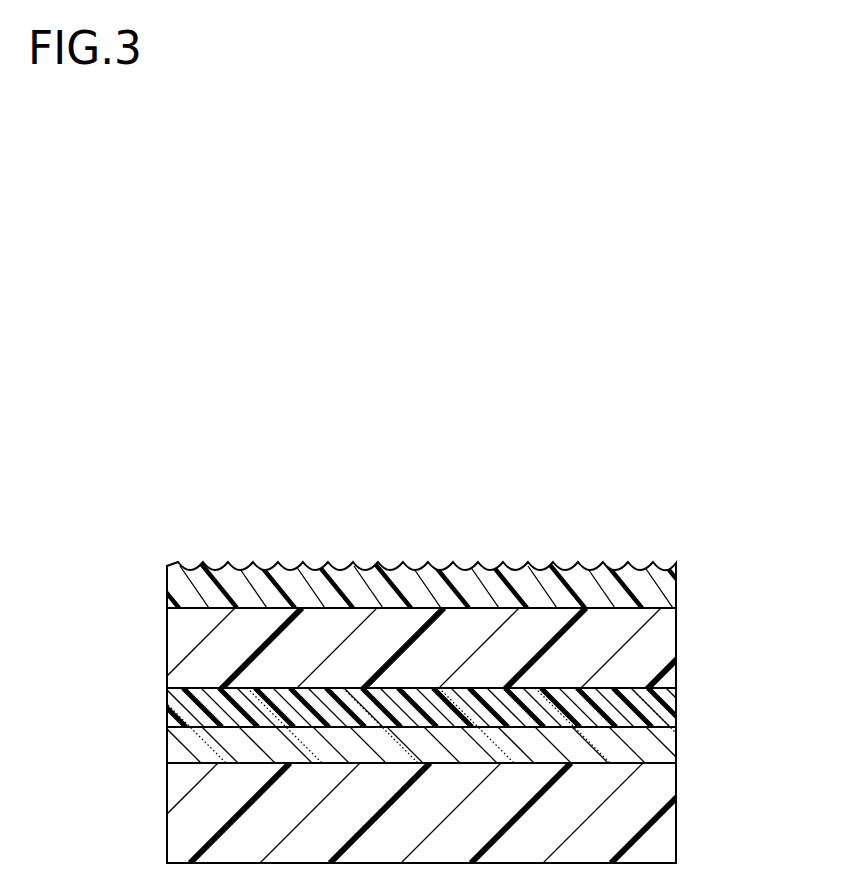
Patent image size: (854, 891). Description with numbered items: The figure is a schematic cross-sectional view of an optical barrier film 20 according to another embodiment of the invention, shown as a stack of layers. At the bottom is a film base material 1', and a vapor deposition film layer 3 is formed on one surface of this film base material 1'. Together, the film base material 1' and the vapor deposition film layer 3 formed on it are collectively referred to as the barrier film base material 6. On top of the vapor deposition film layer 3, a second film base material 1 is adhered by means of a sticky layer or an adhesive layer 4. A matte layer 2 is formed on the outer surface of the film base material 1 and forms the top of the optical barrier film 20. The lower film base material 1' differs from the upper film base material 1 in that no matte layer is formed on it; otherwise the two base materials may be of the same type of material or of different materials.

The optical barrier film 20 is at (747, 631).
The matte layer 2 is at (167, 582).
The film base material 1 is at (427, 649).
The sticky layer or adhesive layer 4 is at (169, 712).
The barrier film base material 6 is at (112, 737).
The vapor deposition film layer 3 is at (169, 753).
The film base material 1' is at (414, 813).